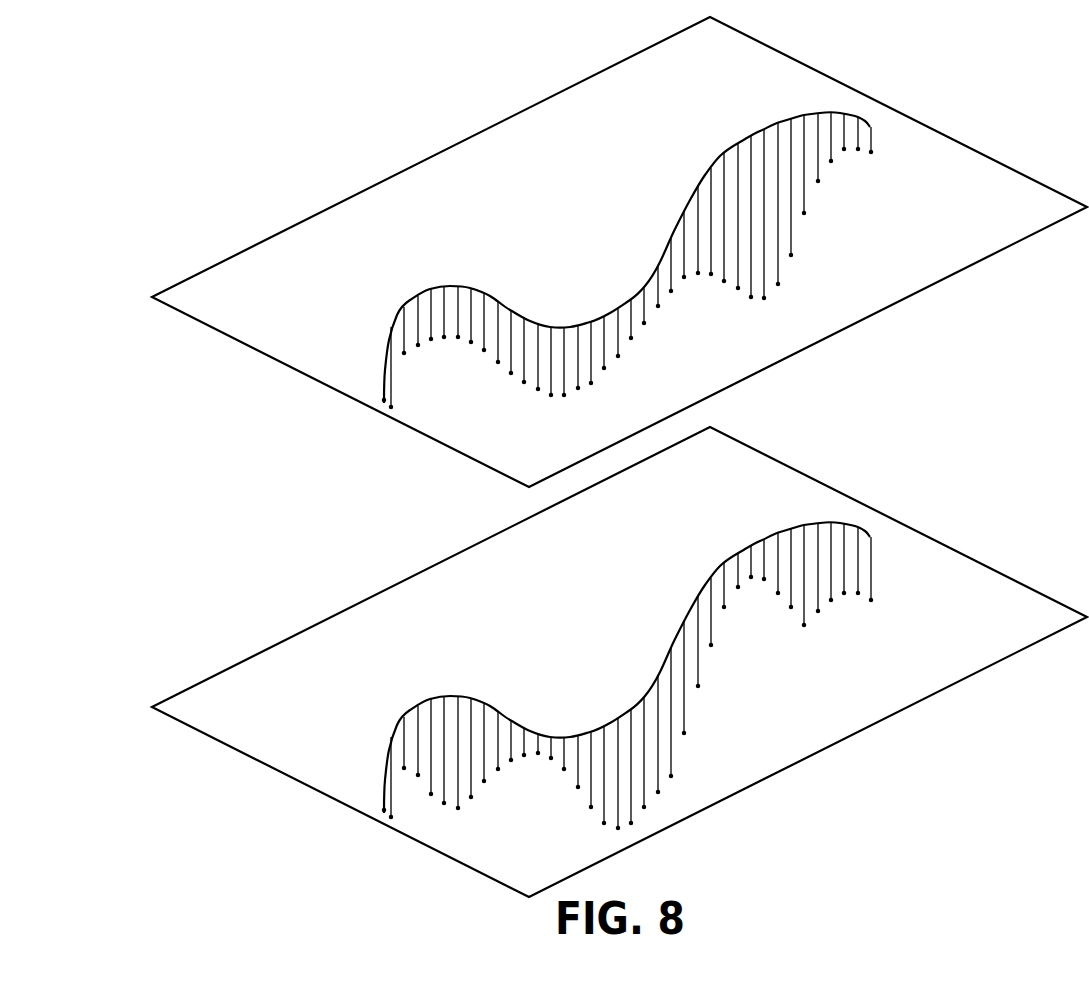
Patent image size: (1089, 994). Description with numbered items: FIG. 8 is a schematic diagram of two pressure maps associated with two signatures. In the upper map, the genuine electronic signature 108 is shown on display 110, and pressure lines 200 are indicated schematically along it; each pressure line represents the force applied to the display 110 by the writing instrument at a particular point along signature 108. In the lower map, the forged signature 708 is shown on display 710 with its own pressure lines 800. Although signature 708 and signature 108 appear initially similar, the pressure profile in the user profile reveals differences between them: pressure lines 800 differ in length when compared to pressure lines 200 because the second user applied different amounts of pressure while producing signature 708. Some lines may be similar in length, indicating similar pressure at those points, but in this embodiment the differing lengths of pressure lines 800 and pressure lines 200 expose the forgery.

The display 110 is at (487, 160).
The electronic signature 108 is at (598, 320).
The pressure lines 200 is at (792, 232).
The display 710 is at (407, 607).
The forged signature 708 is at (598, 730).
The pressure lines 800 is at (698, 667).